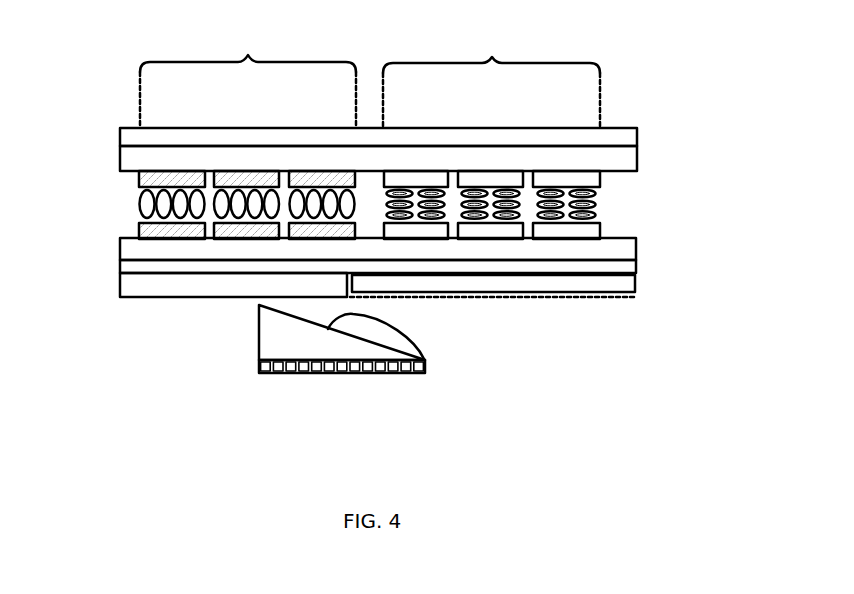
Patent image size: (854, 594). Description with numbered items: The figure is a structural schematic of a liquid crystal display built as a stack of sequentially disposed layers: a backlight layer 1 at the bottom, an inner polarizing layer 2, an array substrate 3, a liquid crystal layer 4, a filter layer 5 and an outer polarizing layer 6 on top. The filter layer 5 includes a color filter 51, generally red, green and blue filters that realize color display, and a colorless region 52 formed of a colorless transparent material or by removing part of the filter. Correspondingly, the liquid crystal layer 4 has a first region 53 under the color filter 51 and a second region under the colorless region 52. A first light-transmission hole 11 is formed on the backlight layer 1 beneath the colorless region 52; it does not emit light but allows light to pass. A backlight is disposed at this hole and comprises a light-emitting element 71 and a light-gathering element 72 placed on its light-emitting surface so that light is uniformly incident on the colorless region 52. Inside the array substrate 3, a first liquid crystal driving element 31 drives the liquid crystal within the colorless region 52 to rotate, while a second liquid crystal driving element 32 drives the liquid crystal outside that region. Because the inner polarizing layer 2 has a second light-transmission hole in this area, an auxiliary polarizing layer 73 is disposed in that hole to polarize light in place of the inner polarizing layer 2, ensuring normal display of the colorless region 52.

The backlight layer 1 is at (142, 293).
The inner polarizing layer 2 is at (127, 268).
The array substrate 3 is at (625, 253).
The liquid crystal layer 4 is at (605, 205).
The filter layer 5 is at (618, 157).
The outer polarizing layer 6 is at (618, 140).
The first light-transmission hole 11 is at (523, 297).
The first liquid crystal driving element 31 is at (587, 233).
The second liquid crystal driving element 32 is at (140, 225).
The color filter 51 is at (245, 170).
The colorless region 52 is at (491, 78).
The first region 53 is at (248, 78).
The light-emitting element 71 is at (302, 372).
The light-gathering element 72 is at (285, 350).
The auxiliary polarizing layer 73 is at (618, 285).